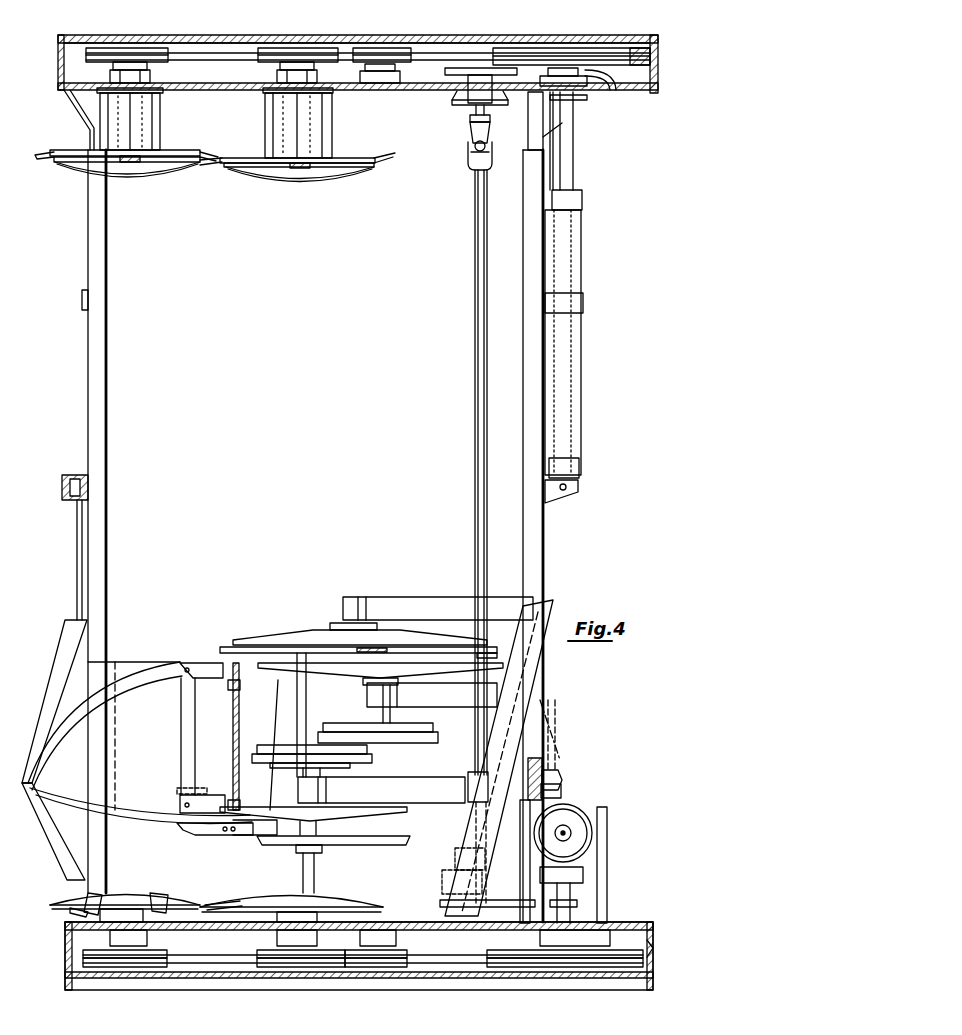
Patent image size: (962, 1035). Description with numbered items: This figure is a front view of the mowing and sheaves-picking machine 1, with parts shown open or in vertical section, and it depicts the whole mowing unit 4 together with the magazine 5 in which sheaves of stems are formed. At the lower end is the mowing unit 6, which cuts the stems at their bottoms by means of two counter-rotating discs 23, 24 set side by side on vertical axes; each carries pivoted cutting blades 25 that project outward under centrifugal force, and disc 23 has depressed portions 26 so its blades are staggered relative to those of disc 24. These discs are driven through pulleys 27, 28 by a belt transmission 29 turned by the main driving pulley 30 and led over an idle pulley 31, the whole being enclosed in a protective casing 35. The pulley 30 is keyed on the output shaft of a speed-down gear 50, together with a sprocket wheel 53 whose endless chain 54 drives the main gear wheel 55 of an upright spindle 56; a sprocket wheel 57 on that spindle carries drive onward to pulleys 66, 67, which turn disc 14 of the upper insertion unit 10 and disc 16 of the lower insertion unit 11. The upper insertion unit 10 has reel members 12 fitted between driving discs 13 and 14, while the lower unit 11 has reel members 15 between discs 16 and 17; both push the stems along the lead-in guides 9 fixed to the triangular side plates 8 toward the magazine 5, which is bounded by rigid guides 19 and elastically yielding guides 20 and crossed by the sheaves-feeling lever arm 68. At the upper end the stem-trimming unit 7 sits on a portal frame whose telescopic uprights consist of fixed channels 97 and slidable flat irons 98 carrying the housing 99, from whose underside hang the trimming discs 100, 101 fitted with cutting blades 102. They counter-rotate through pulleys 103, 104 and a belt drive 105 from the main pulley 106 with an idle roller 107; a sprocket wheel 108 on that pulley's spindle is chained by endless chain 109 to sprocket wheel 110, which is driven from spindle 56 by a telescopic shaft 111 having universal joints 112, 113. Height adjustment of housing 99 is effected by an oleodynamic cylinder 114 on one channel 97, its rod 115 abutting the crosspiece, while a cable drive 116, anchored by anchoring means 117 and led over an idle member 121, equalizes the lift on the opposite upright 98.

The mowing and sheaves-picking machine 1 is at (590, 568).
The mowing unit 4 is at (73, 374).
The magazine 5 is at (206, 718).
The mowing unit 6 is at (56, 938).
The stem-trimming unit 7 is at (56, 58).
The side plates 8 is at (72, 638).
The lead-in guides 9 is at (72, 728).
The upper insertion unit 10 is at (288, 631).
The lower insertion unit 11 is at (392, 816).
The reel members 12 is at (388, 644).
The driving disc 13 is at (320, 630).
The driving disc 14 is at (430, 668).
The reel members 15 is at (222, 836).
The disc 16 is at (368, 810).
The disc 17 is at (396, 843).
The rigid guides 19 is at (236, 685).
The elastically yielding guides 20 is at (198, 663).
The counter-rotating disc 23 is at (72, 895).
The counter-rotating disc 24 is at (266, 896).
The cutting blades 25 is at (215, 906).
The depressed portions 26 is at (166, 900).
The pulley 27 is at (102, 962).
The pulley 28 is at (282, 962).
The belt transmission 29 is at (450, 962).
The main driving pulley 30 is at (602, 962).
The idle pulley 31 is at (382, 962).
The protective casing 35 is at (634, 932).
The speed-down gear 50 is at (566, 806).
The sprocket wheel 53 is at (583, 892).
The endless chain 54 is at (600, 835).
The main gear wheel 55 is at (440, 904).
The upright spindle 56 is at (456, 866).
The sprocket wheel 57 is at (470, 790).
The pulley 66 is at (345, 732).
The pulley 67 is at (366, 754).
The sheaves-feeling lever arm 68 is at (200, 785).
The channel 97 is at (88, 250).
The flat iron 98 is at (534, 144).
The housing 99 is at (602, 44).
The stem-trimming disc 100 is at (145, 178).
The stem-trimming disc 101 is at (330, 180).
The cutting blades 102 is at (40, 155).
The pulley 103 is at (143, 52).
The pulley 104 is at (315, 52).
The belt drive 105 is at (230, 56).
The main pulley 106 is at (638, 48).
The idle roller 107 is at (405, 52).
The sprocket wheel 108 is at (614, 92).
The endless chain 109 is at (545, 68).
The sprocket wheel 110 is at (480, 68).
The telescopic shaft 111 is at (474, 240).
The universal joint 112 is at (468, 150).
The universal joint 113 is at (528, 722).
The oleodynamic cylinder 114 is at (578, 366).
The rod 115 is at (574, 128).
The cable drive 116 is at (72, 530).
The anchoring means 117 is at (560, 765).
The idle member 121 is at (78, 476).